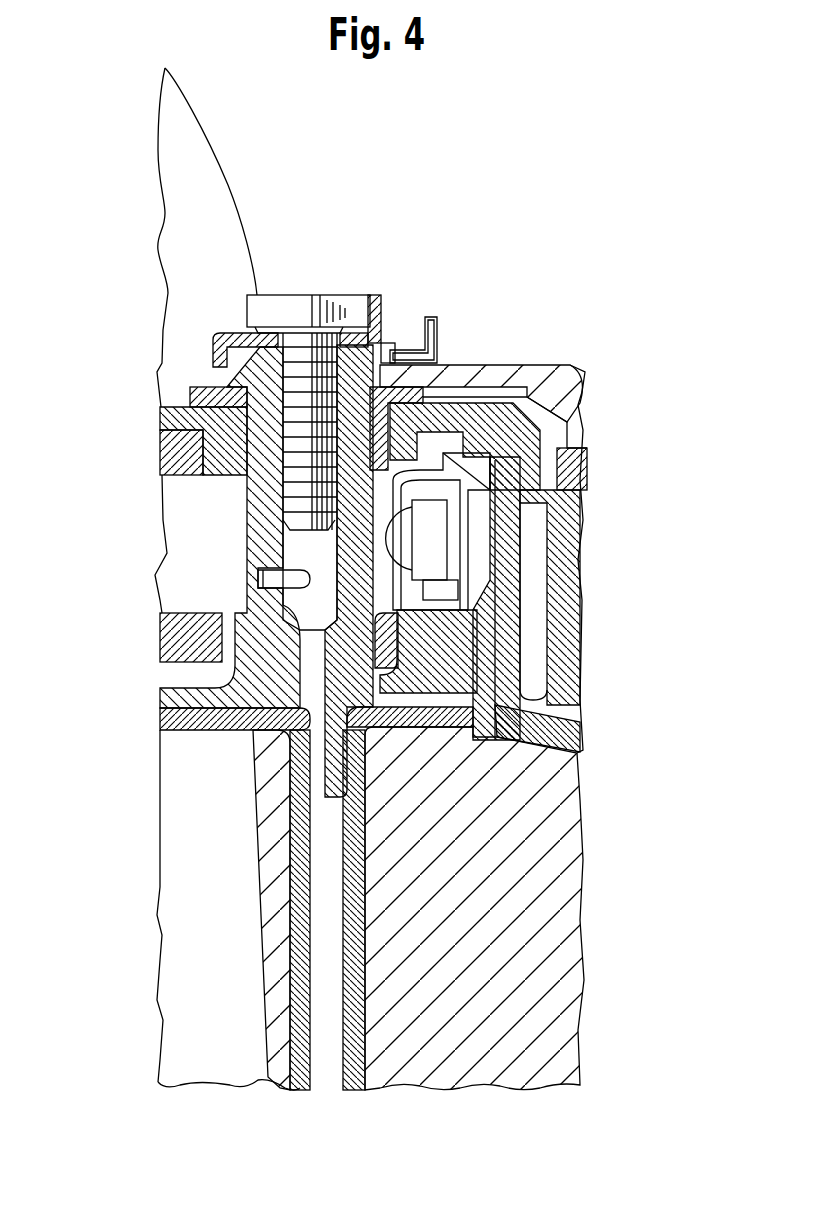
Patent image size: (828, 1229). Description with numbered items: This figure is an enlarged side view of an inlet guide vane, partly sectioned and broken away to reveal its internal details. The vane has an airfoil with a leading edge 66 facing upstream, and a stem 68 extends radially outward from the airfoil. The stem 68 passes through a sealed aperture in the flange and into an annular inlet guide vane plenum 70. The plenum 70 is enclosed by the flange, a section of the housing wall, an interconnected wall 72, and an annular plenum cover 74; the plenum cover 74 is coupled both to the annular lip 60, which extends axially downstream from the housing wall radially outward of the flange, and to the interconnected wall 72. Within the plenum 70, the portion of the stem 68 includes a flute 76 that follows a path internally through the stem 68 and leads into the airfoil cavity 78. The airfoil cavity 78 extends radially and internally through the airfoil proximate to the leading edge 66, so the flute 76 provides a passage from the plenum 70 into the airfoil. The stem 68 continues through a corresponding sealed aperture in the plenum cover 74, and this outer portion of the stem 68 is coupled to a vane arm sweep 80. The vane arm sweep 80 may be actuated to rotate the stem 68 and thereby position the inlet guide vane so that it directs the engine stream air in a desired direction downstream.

The annular lip 60 is at (165, 455).
The leading edge 66 is at (257, 915).
The stem 68 is at (350, 520).
The annular inlet guide vane plenum 70 is at (208, 517).
The interconnected wall 72 is at (530, 630).
The annular plenum cover 74 is at (178, 420).
The flute 76 is at (258, 578).
The airfoil cavity 78 is at (332, 874).
The vane arm sweep 80 is at (507, 365).